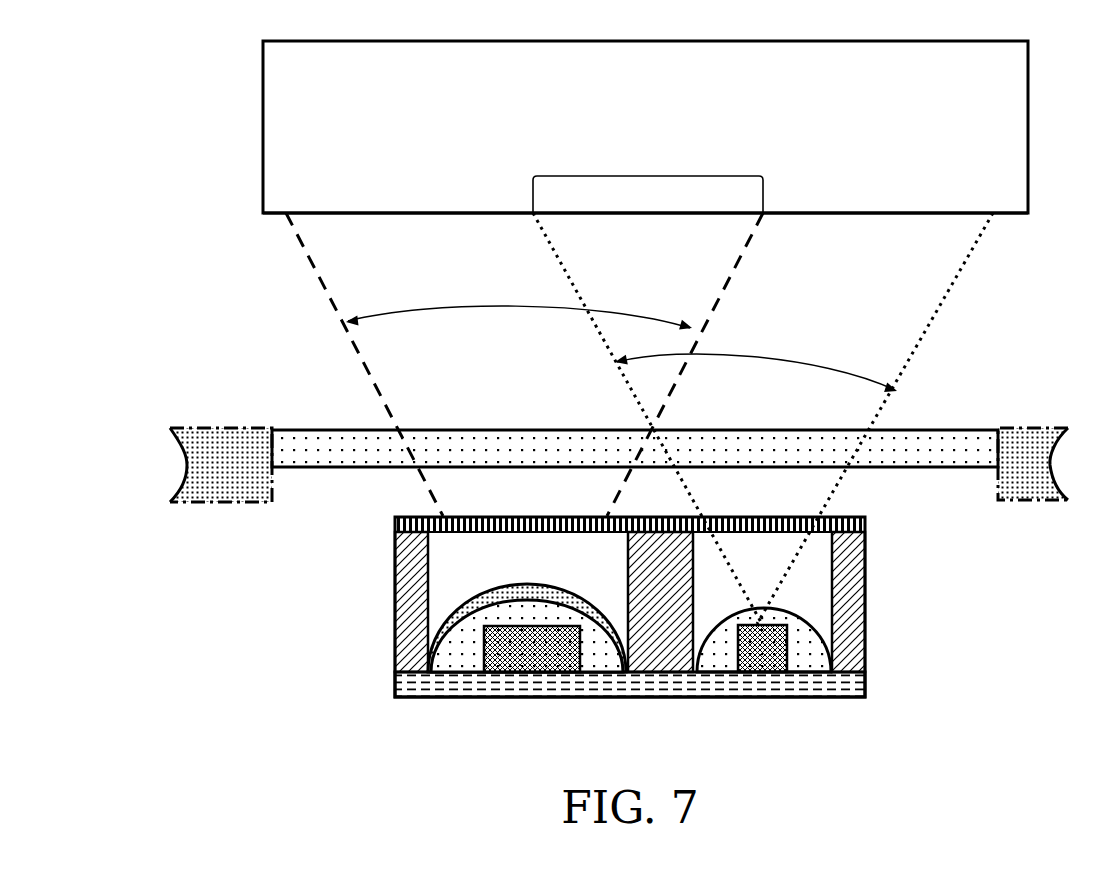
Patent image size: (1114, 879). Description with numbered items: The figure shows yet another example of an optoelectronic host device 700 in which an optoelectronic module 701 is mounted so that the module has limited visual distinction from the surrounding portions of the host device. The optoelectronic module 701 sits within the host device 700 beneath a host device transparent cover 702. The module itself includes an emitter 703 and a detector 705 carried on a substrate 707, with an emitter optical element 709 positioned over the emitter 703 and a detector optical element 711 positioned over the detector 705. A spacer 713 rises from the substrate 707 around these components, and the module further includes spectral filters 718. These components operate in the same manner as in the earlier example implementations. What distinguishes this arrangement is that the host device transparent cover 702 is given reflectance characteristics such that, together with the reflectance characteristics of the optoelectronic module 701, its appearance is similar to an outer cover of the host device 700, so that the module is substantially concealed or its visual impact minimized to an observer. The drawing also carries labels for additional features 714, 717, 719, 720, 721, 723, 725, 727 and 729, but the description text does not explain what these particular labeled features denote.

The host device 700 is at (598, 448).
The optoelectronic module 701 is at (603, 650).
The host device transparent cover 702 is at (327, 452).
The emitter 703 is at (785, 656).
The detector 705 is at (507, 657).
The substrate 707 is at (397, 688).
The emitter optical element 709 is at (800, 628).
The detector optical element 711 is at (443, 660).
The spacer 713 is at (852, 587).
The central partition wall 714 is at (648, 650).
The top cover layer 717 is at (395, 524).
The spectral filters 718 is at (472, 599).
The second light beam boundary 719 is at (933, 325).
The mounting block 720 is at (197, 490).
The second illumination spread 721 is at (757, 362).
The target surface 723 is at (389, 101).
The illuminated surface 725 is at (409, 203).
The first illumination spread 727 is at (405, 314).
The overlap region 729 is at (577, 176).